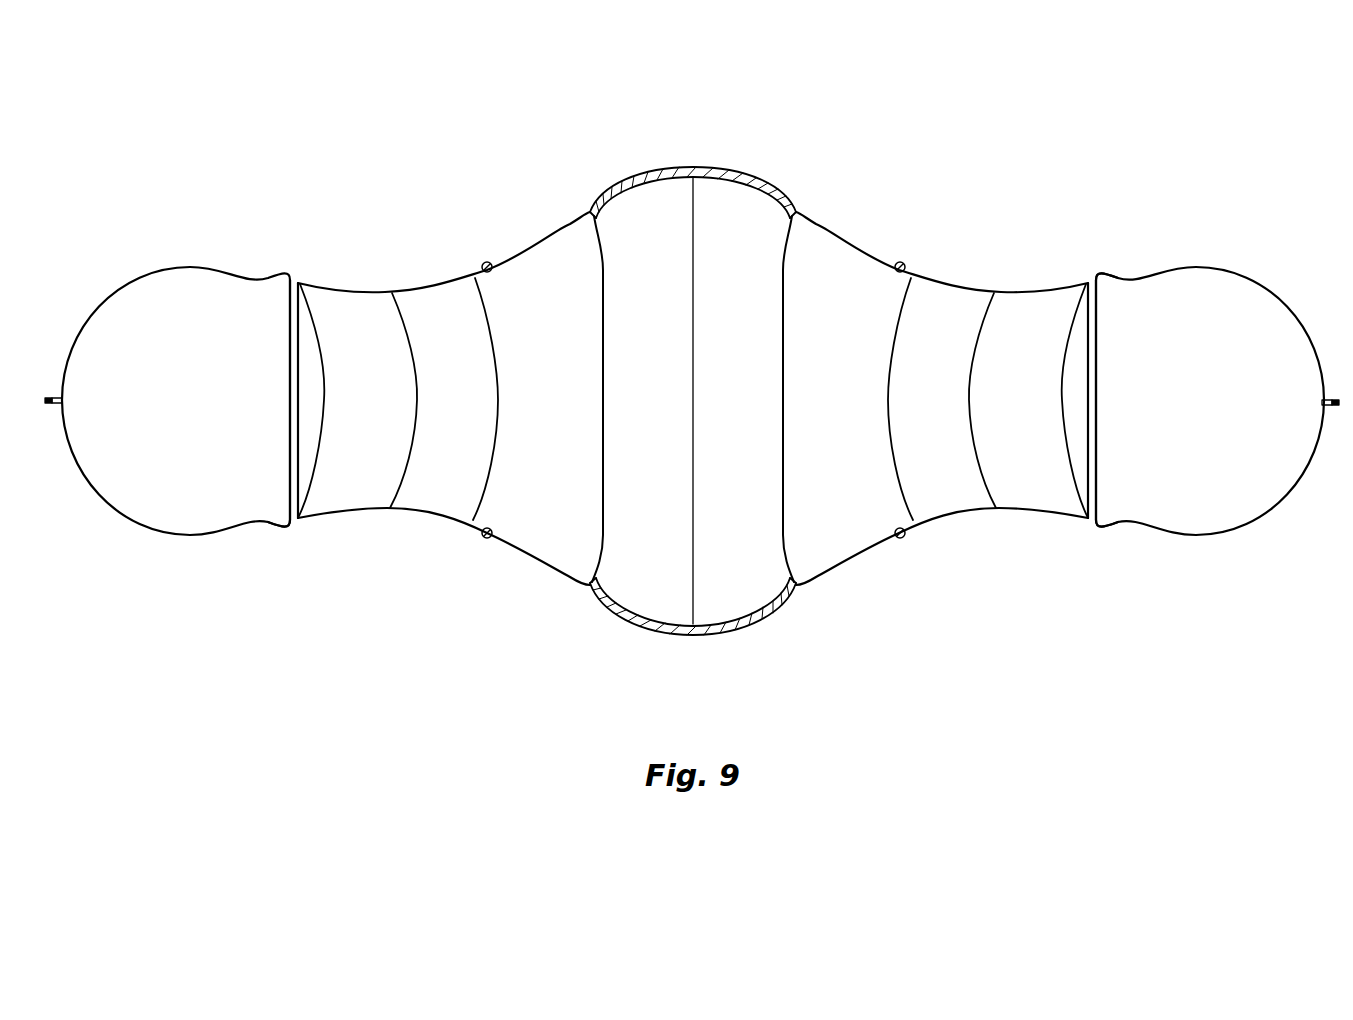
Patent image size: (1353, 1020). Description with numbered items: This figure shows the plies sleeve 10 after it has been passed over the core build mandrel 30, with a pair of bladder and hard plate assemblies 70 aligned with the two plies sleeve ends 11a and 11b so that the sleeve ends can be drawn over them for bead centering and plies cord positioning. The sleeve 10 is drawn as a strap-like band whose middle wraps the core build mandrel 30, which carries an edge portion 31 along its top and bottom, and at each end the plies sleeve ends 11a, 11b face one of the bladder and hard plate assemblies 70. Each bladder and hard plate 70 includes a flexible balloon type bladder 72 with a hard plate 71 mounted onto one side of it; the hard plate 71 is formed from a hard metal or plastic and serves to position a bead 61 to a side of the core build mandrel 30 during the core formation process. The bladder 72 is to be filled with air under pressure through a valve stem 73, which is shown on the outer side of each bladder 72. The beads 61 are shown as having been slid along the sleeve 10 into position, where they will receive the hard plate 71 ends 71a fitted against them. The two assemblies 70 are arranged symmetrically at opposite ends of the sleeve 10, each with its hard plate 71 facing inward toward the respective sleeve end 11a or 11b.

The sleeve 10 is at (520, 195).
The plies sleeve end 11a is at (1087, 284).
The plies sleeve end 11b is at (299, 286).
The core build mandrel 30 is at (741, 319).
The edge binding 31 is at (711, 170).
The bead 61 is at (903, 262).
The bladder and hard plate 70 is at (692, 364).
The hard plate 71 is at (287, 478).
The hard plate end 71a is at (285, 528).
The bladder 72 is at (196, 415).
The valve stem 73 is at (52, 410).